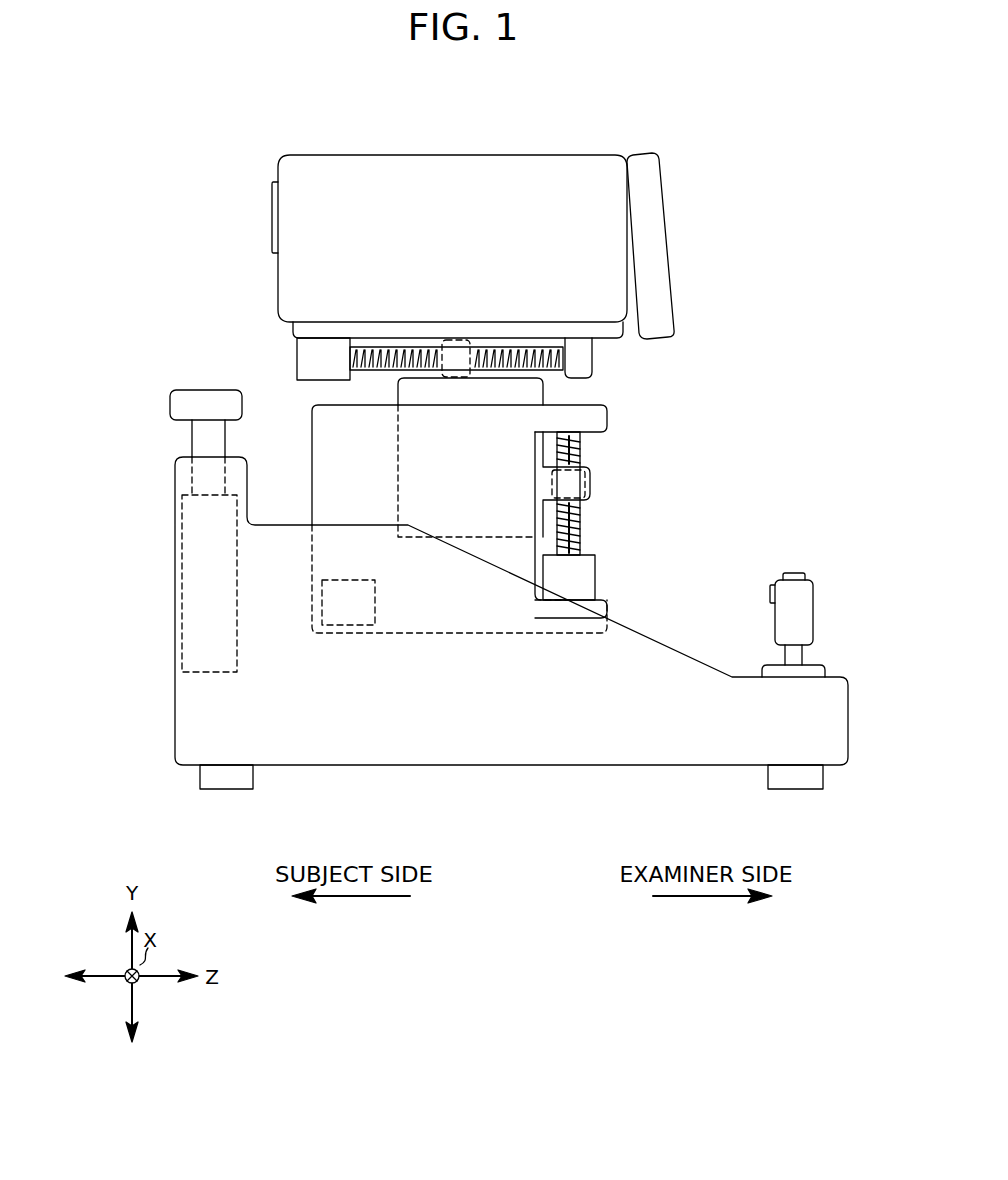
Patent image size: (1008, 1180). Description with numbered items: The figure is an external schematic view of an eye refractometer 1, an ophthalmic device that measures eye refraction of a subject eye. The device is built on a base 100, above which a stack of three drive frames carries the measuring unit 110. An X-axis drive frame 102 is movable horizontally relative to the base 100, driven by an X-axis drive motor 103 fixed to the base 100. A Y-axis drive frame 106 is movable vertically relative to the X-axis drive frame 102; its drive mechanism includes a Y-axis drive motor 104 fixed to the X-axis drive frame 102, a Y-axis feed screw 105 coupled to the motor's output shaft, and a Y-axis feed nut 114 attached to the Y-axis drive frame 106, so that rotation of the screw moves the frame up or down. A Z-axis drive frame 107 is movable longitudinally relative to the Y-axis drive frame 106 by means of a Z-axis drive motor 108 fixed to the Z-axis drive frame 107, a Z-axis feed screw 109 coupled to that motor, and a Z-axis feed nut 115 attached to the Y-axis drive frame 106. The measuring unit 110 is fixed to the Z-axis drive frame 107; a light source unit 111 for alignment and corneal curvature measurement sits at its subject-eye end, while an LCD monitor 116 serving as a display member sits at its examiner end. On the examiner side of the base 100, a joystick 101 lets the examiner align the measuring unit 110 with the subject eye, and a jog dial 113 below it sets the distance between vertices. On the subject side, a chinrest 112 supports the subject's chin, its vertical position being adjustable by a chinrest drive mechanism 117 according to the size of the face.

The eye refractometer 1 is at (748, 118).
The base 100 is at (497, 738).
The joystick 101 is at (778, 585).
The X-axis drive frame 102 is at (340, 435).
The X-axis drive motor 103 is at (350, 580).
The Y-axis drive motor 104 is at (590, 580).
The Y-axis feed screw 105 is at (583, 525).
The Y-axis drive frame 106 is at (530, 397).
The Z-axis drive frame 107 is at (580, 358).
The Z-axis drive motor 108 is at (298, 352).
The Z-axis feed screw 109 is at (530, 350).
The measuring unit 110 is at (375, 205).
The light source unit 111 is at (273, 197).
The chinrest 112 is at (180, 408).
The jog dial 113 is at (812, 668).
The Y-axis feed nut 114 is at (578, 488).
The Z-axis feed nut 115 is at (455, 352).
The LCD monitor 116 is at (650, 253).
The chinrest drive mechanism 117 is at (197, 630).